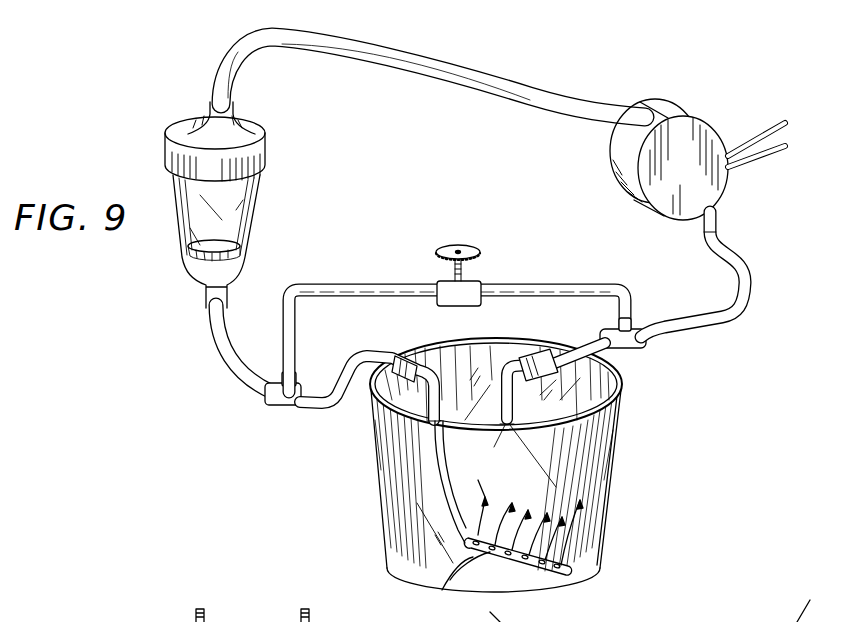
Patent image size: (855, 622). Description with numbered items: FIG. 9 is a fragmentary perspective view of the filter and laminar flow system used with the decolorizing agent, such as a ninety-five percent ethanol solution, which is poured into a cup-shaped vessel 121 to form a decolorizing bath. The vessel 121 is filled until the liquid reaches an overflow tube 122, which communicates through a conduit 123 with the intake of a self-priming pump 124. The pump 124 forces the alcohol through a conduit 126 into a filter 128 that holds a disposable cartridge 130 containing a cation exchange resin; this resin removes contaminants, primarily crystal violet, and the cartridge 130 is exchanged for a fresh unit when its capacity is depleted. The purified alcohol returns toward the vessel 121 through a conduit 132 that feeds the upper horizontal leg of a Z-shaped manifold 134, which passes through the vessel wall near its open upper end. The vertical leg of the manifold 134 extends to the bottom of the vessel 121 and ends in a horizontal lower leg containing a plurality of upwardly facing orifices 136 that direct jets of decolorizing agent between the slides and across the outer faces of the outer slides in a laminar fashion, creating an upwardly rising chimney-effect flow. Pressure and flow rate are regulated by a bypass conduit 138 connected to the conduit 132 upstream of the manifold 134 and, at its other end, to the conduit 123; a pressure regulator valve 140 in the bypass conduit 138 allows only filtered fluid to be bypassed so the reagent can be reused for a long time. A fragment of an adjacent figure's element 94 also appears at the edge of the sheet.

The cup-shaped vessel 121 is at (602, 437).
The overflow tube 122 is at (507, 404).
The conduit 123 is at (727, 258).
The self-priming pump 124 is at (613, 163).
The conduit 126 is at (476, 88).
The filter 128 is at (276, 128).
The disposable cartridge 130 is at (240, 212).
The conduit 132 is at (228, 313).
The Z-shaped manifold 134 is at (430, 393).
The orifices 136 is at (501, 551).
The bypass conduit 138 is at (360, 268).
The pressure regulator valve 140 is at (449, 245).
The member 94 is at (503, 611).